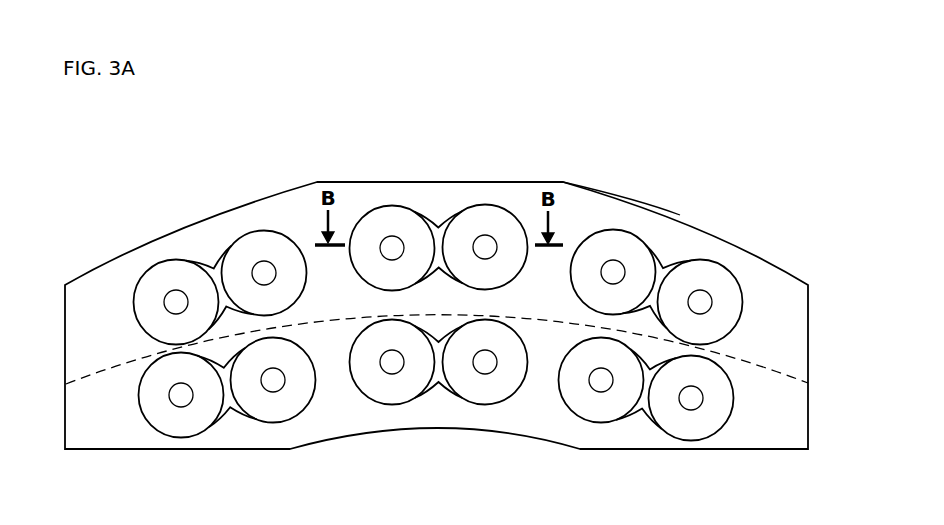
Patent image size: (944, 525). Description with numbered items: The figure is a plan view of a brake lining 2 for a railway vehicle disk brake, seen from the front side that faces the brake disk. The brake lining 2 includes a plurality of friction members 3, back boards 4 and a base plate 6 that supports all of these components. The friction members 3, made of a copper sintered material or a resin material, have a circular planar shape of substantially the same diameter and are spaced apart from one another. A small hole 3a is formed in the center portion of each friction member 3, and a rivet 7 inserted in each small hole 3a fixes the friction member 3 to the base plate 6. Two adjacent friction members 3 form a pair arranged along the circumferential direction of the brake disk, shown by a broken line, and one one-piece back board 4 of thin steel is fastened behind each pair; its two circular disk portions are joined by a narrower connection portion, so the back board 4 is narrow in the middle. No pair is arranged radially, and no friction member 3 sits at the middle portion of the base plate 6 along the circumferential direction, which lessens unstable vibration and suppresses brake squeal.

The brake lining 2 is at (640, 140).
The friction member 3 is at (166, 262).
The small hole 3a is at (482, 244).
The back board 4 is at (209, 262).
The base plate 6 is at (575, 192).
The rivet 7 is at (174, 297).